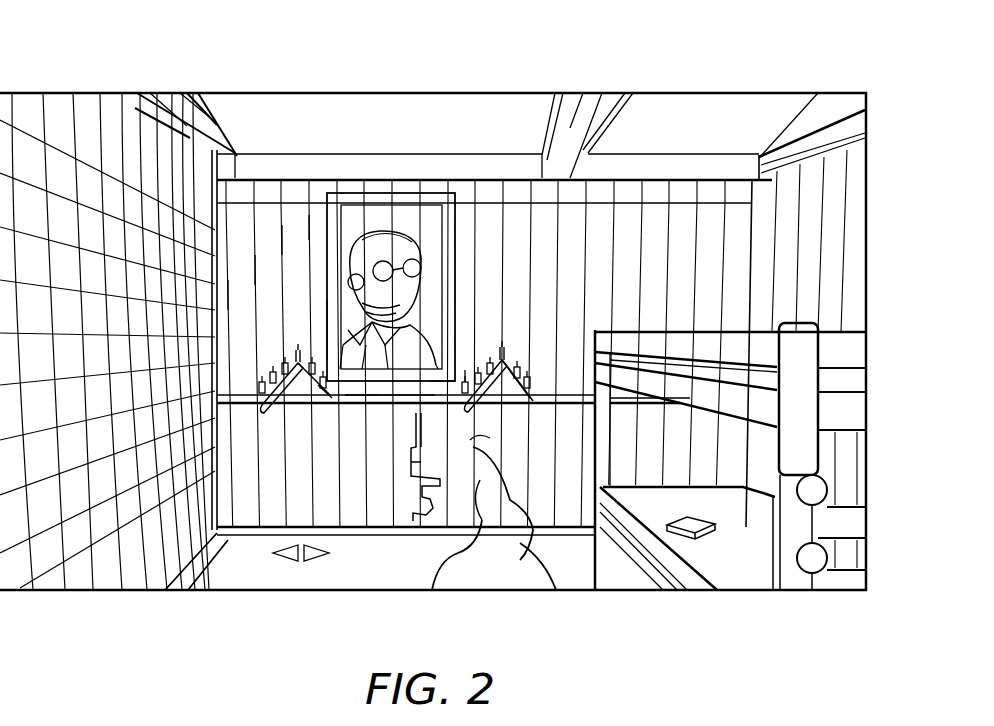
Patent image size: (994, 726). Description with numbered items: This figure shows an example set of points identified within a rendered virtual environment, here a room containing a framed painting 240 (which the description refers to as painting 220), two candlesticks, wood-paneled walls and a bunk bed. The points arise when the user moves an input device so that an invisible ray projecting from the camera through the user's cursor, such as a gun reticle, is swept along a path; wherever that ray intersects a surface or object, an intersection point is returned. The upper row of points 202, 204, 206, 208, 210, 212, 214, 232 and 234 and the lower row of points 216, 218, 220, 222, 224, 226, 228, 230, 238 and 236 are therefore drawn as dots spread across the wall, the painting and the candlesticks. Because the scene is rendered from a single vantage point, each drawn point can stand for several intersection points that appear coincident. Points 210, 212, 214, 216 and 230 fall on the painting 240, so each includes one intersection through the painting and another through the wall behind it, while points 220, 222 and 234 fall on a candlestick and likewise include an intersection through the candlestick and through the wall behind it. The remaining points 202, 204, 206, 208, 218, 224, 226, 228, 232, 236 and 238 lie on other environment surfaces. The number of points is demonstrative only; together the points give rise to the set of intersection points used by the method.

The point 202 is at (245, 295).
The point 204 is at (270, 268).
The point 206 is at (293, 240).
The point 208 is at (315, 227).
The point 210 is at (363, 240).
The point 212 is at (377, 270).
The portrait 240 is at (427, 217).
The point 214 is at (362, 302).
The point 232 is at (472, 362).
The point 234 is at (490, 382).
The point 216 is at (347, 320).
The point 218 is at (317, 332).
The point 220 is at (298, 363).
The point 222 is at (325, 393).
The point 224 is at (362, 402).
The point 226 is at (392, 402).
The point 228 is at (420, 393).
The point 230 is at (440, 373).
The point 238 is at (482, 433).
The point 236 is at (493, 412).